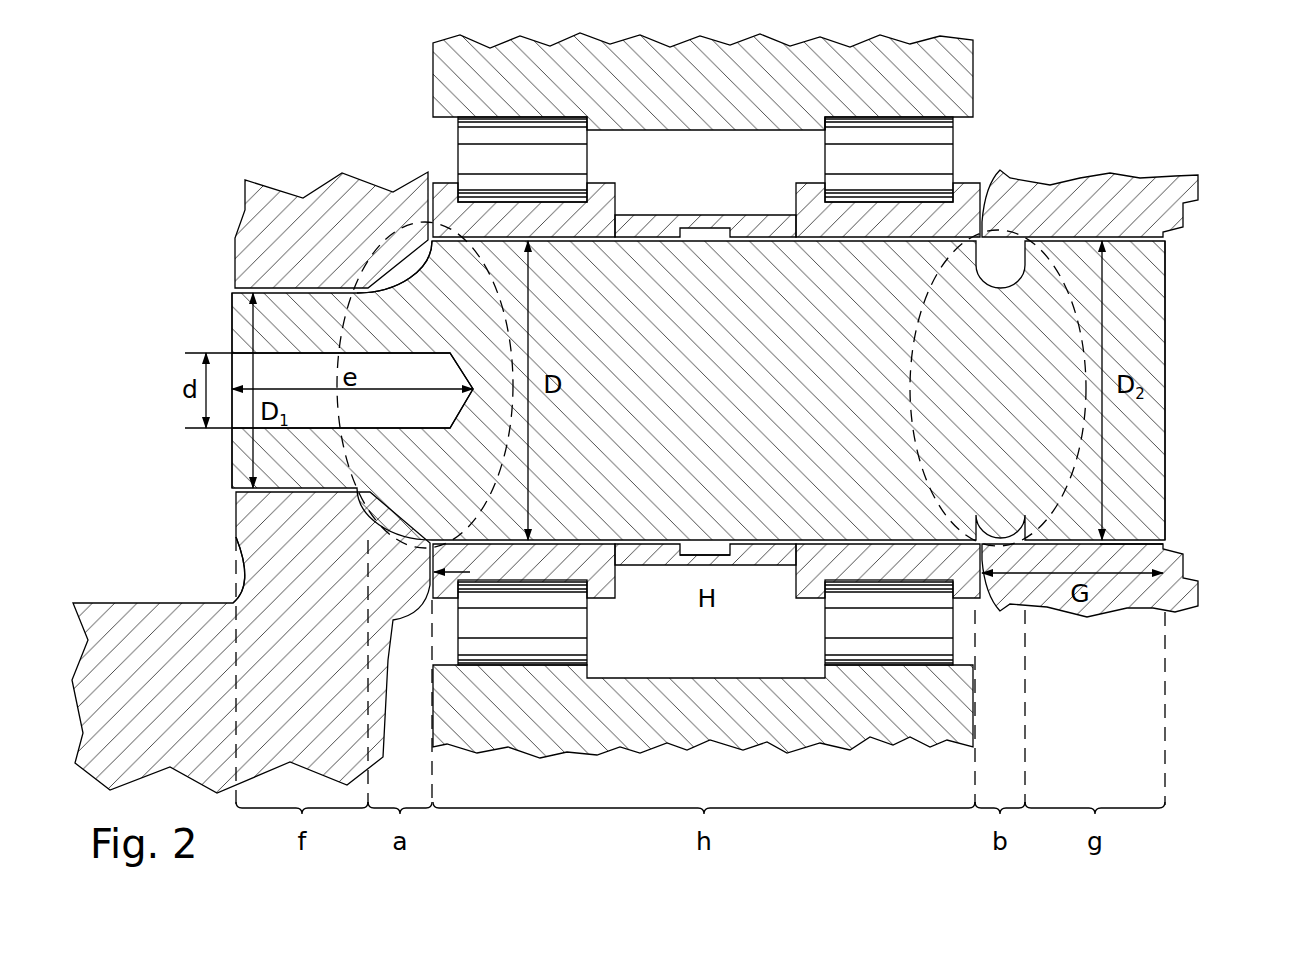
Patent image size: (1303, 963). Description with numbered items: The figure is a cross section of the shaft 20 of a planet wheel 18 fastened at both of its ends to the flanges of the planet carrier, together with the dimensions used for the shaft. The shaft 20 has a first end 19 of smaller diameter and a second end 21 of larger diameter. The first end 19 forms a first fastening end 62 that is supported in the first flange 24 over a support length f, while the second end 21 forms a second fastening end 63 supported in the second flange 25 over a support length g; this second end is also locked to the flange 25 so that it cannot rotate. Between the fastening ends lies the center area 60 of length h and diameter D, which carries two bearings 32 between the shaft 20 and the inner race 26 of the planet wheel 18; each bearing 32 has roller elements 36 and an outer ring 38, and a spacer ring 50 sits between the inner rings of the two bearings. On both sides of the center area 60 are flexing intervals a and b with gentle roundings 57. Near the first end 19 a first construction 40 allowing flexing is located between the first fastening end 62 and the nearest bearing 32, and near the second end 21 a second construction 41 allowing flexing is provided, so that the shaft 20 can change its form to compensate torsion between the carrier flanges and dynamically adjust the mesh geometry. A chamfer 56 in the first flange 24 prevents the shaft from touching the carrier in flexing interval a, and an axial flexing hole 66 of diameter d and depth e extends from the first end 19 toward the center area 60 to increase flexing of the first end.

The planet wheel 18 is at (703, 395).
The first end 19 is at (226, 335).
The shaft 20 is at (698, 390).
The second end 21 is at (1170, 407).
The first flange 24 is at (331, 230).
The second flange 25 is at (1090, 393).
The inner race 26 is at (867, 663).
The bearing 32 is at (1063, 147).
The roller elements 36 is at (490, 150).
The outer ring 38 is at (596, 213).
The first construction allowing flexing 40 is at (337, 436).
The second construction allowing flexing 41 is at (1084, 333).
The spacer ring 50 is at (668, 223).
The chamfer 56 is at (400, 524).
The roundings 57 is at (413, 283).
The center area 60 is at (647, 543).
The first fastening end 62 is at (235, 536).
The second fastening end 63 is at (1118, 547).
The flexing hole 66 is at (352, 390).